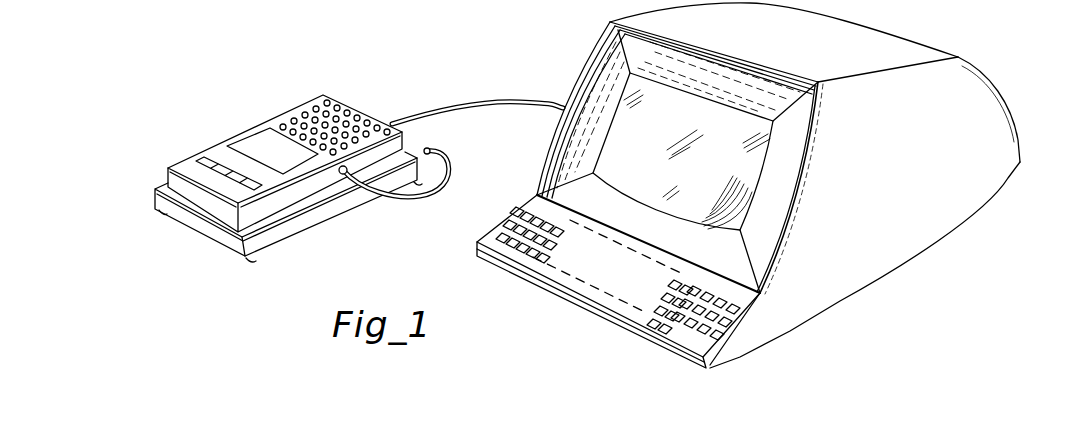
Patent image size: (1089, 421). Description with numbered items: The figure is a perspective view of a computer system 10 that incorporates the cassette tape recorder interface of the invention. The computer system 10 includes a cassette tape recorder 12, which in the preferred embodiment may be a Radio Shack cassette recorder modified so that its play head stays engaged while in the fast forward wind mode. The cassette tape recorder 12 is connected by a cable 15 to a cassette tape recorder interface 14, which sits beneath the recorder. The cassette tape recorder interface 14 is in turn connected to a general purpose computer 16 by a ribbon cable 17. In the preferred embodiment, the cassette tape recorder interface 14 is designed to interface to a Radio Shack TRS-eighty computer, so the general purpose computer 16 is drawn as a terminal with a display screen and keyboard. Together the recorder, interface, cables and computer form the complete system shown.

The computer system 10 is at (488, 66).
The cassette tape recorder 12 is at (232, 138).
The cassette tape recorder interface 14 is at (216, 247).
The cable 15 is at (441, 193).
The general purpose computer 16 is at (570, 298).
The ribbon cable 17 is at (490, 104).